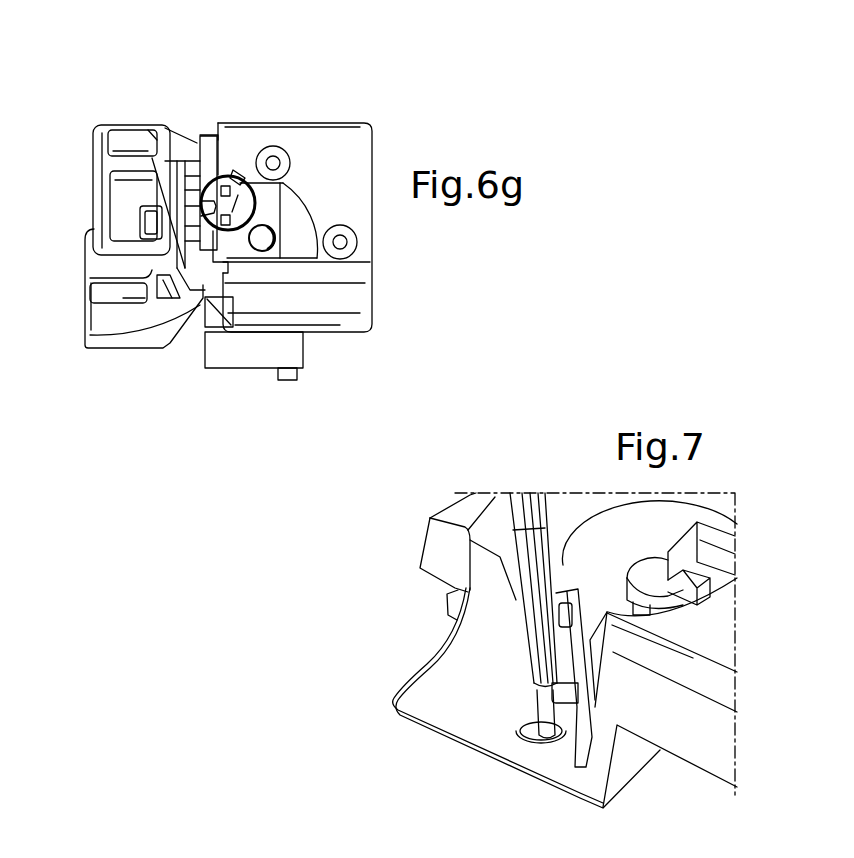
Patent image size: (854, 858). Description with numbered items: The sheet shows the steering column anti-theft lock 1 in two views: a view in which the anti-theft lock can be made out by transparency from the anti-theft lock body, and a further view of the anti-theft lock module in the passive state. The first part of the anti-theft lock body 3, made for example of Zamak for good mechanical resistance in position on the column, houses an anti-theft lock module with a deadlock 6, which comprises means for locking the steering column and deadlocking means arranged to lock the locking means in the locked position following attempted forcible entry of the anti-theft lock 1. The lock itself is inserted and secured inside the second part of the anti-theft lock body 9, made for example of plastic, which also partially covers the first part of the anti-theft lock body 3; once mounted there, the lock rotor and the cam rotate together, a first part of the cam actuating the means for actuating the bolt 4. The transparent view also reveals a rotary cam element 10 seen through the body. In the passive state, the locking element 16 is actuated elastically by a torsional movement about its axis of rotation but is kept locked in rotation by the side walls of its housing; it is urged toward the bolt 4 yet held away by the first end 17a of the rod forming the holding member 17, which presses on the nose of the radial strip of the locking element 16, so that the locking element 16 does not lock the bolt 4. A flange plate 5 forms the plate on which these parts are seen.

In FIG. 6G, the anti-theft lock 1 is at (128, 94).
In FIG. 6G, the first part of the anti-theft lock body 3 is at (119, 343).
In FIG. 6G, the bolt 4 is at (130, 268).
In FIG. 7, the bolt 4 is at (432, 552).
In FIG. 7, the flange plate 5 is at (428, 695).
In FIG. 6G, the deadlock 6 is at (187, 180).
In FIG. 6G, the second part of the anti-theft lock body 9 is at (335, 320).
In FIG. 6G, the rotary cam 10 is at (237, 208).
In FIG. 7, the locking element 16 is at (573, 708).
In FIG. 7, the holding member 17 is at (528, 628).
In FIG. 7, the first end 17a is at (545, 720).